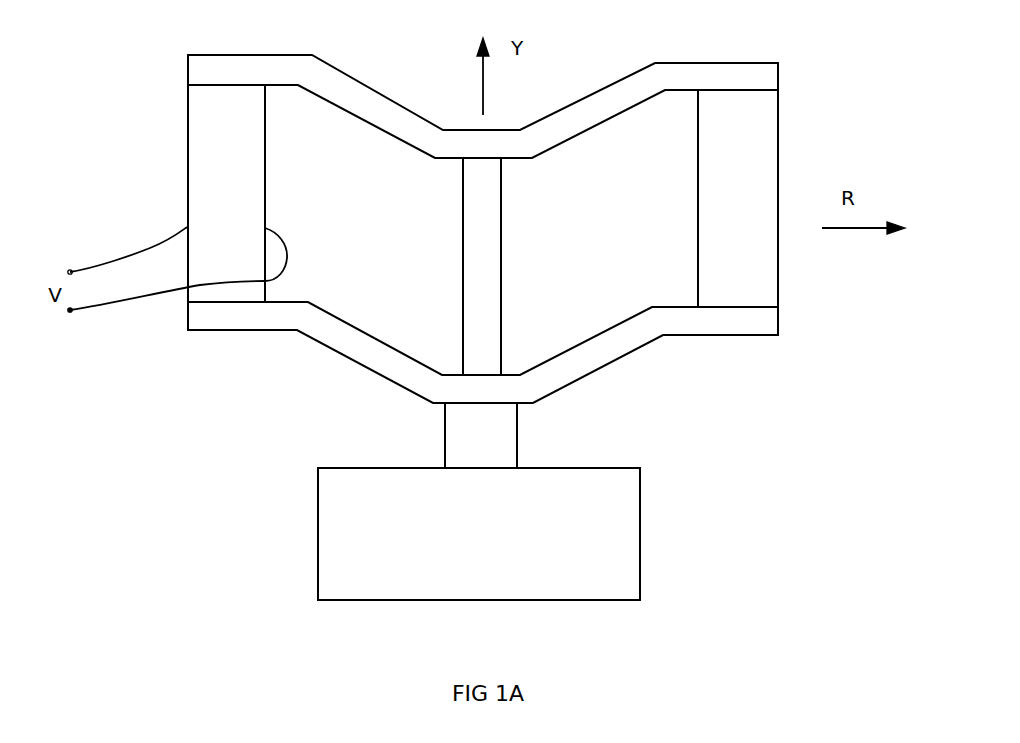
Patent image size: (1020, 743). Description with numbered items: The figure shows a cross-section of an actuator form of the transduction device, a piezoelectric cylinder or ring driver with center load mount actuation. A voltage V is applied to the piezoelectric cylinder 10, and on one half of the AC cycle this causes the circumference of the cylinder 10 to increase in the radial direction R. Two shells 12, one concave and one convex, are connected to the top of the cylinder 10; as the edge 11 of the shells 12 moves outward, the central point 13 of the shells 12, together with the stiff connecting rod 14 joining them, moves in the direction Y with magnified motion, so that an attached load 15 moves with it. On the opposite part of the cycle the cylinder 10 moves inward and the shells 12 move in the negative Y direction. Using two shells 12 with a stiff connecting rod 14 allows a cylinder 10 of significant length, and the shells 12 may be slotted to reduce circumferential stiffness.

The piezoelectric cylinder 10 is at (477, 196).
The edge of the shells 11 is at (687, 73).
The shells 12 is at (385, 113).
The central point of the shells 13 is at (481, 435).
The connecting rod 14 is at (482, 266).
The load 15 is at (479, 534).